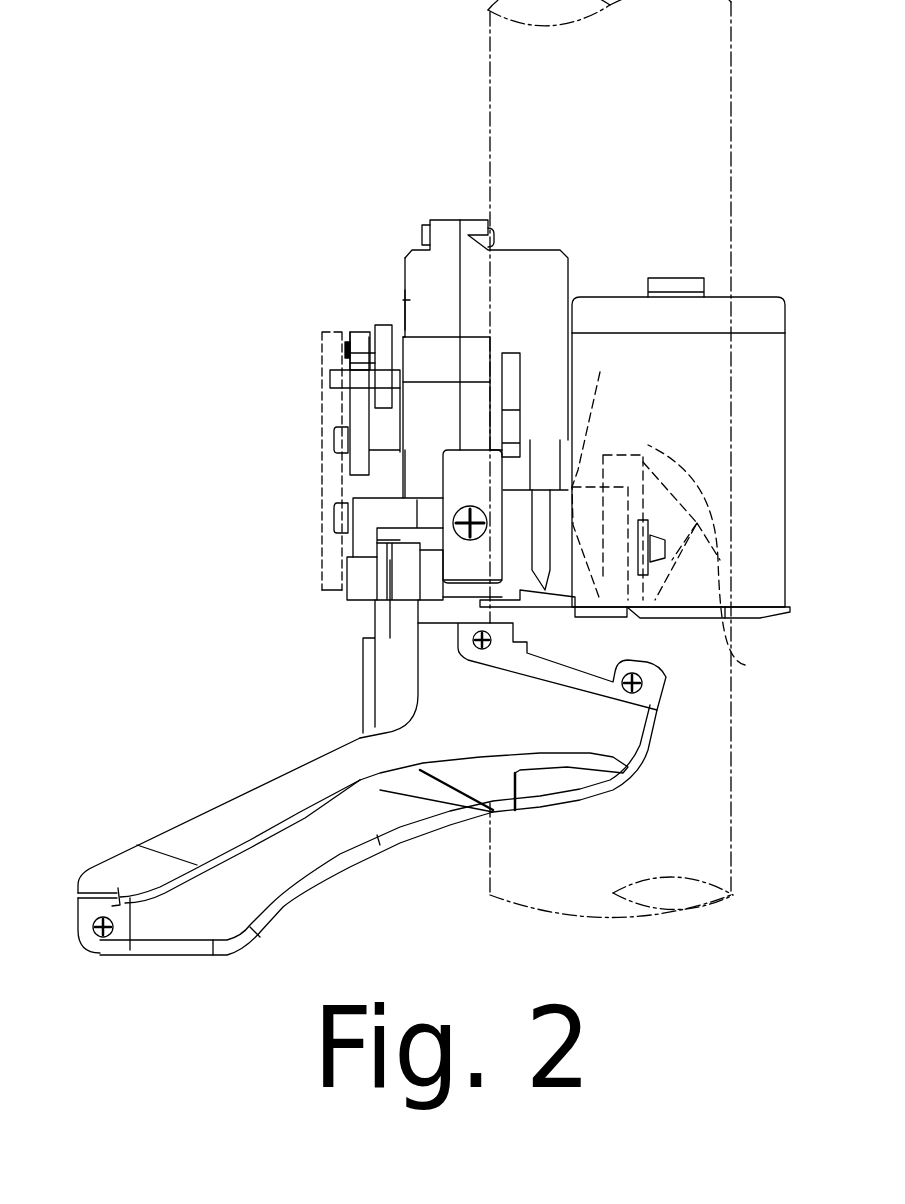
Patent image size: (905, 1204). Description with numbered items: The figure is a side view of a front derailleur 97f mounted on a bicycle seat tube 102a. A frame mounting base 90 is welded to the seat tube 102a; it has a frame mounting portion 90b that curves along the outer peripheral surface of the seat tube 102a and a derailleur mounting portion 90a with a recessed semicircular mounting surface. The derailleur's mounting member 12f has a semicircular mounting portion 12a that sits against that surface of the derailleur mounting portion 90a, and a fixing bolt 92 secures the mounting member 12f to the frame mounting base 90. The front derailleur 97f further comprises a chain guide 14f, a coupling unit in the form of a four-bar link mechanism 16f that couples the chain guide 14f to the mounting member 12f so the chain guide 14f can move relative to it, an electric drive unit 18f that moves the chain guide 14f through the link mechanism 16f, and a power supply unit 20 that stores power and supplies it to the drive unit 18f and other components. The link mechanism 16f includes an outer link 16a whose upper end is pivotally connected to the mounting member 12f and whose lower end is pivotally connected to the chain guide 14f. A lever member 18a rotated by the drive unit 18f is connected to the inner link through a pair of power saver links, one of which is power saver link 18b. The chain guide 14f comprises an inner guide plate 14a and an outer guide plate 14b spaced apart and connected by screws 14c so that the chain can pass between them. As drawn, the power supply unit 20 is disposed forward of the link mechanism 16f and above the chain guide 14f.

The seat tube 102a is at (488, 122).
The power supply unit 20 is at (740, 298).
The front derailleur 97f is at (346, 256).
The electric drive unit 18f is at (403, 300).
The lever member 18a is at (383, 342).
The power saver link 18b is at (358, 408).
The outer link 16a is at (465, 467).
The four-bar link mechanism 16f is at (445, 563).
The semicircular mounting portion 12a is at (601, 470).
The mounting member 12f is at (557, 590).
The frame mounting base 90 is at (659, 588).
The derailleur mounting portion 90a is at (628, 453).
The frame mounting portion 90b is at (672, 510).
The fixing bolt 92 is at (718, 563).
The inner guide plate 14a is at (355, 840).
The outer guide plate 14b is at (258, 800).
The screws 14c is at (112, 935).
The chain guide 14f is at (330, 760).